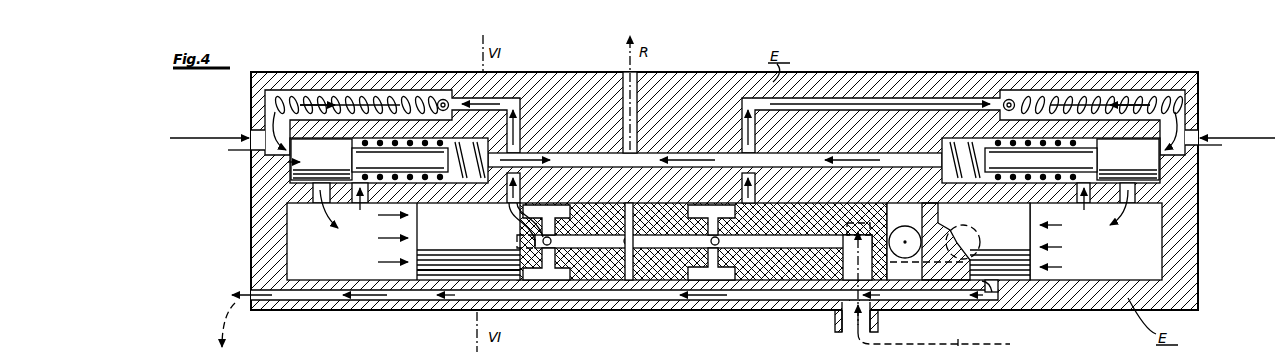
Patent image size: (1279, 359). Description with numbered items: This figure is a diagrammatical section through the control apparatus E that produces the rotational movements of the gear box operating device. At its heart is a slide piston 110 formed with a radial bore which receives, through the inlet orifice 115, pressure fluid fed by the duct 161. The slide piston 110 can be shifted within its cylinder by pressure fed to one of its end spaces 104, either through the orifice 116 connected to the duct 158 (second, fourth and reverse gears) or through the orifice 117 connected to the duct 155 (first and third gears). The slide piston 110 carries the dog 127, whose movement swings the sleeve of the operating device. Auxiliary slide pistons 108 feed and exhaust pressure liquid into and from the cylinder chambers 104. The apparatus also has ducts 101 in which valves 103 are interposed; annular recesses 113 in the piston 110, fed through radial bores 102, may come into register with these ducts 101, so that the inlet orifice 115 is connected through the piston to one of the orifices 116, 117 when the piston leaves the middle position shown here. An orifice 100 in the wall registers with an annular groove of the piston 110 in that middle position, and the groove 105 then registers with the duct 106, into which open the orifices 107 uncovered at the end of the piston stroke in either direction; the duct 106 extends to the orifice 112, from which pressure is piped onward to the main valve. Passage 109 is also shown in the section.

The orifice 100 is at (560, 275).
The duct 101 is at (500, 100).
The radial bore 102 is at (716, 262).
The valve 103 is at (443, 99).
The end space 104 is at (343, 258).
The groove 105 is at (627, 270).
The duct 106 is at (521, 293).
The orifice 107 is at (462, 282).
The auxiliary slide piston 108 is at (303, 162).
The passage 109 is at (562, 162).
The slide piston 110 is at (433, 273).
The orifice 112 is at (250, 290).
The annular recess 113 is at (562, 210).
The inlet orifice 115 is at (838, 322).
The orifice 116 is at (1196, 135).
The orifice 117 is at (250, 132).
The dog 127 is at (907, 252).
The duct 155 is at (210, 153).
The duct 158 is at (1236, 152).
The duct 161 is at (971, 308).